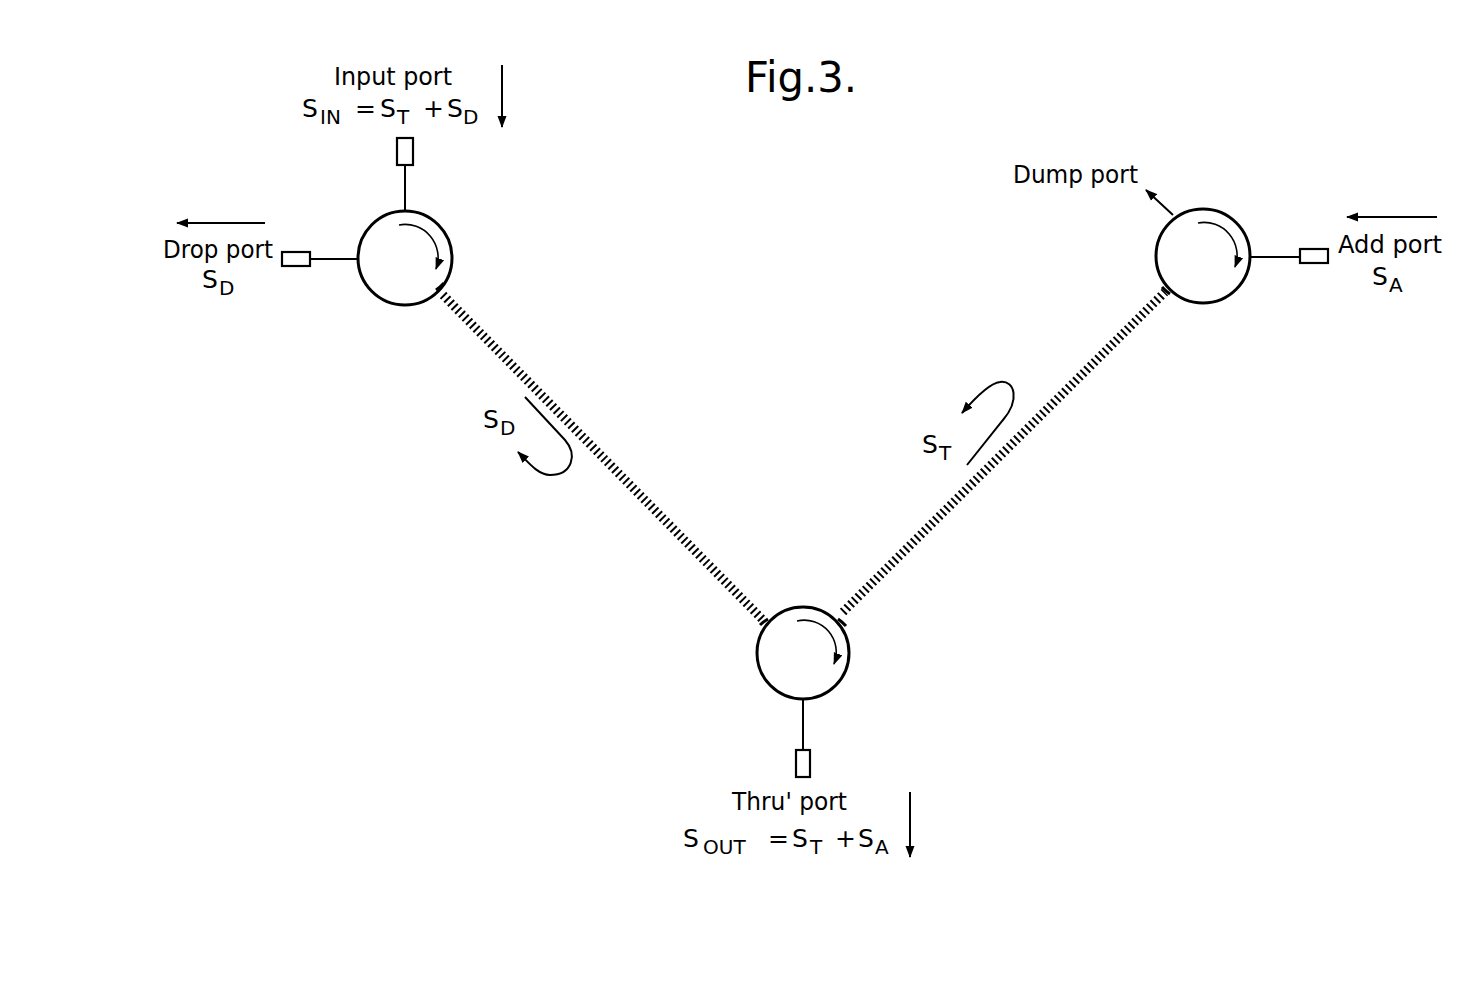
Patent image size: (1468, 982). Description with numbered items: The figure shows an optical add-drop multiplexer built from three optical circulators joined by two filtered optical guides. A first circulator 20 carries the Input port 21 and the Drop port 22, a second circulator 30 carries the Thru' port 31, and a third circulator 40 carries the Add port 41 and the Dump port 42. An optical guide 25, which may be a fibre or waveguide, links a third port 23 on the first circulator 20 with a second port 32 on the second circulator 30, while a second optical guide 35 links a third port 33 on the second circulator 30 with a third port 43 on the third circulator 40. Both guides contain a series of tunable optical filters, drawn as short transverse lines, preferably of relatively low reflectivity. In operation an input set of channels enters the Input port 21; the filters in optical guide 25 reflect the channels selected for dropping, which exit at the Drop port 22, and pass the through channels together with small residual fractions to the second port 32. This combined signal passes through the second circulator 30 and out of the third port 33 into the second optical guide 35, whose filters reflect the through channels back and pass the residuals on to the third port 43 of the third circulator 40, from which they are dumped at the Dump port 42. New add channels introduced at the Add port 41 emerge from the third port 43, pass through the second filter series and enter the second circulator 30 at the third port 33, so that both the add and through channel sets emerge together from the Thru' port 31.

The first optical circulator 20 is at (419, 273).
The Input port 21 is at (402, 208).
The Drop port 22 is at (355, 261).
The third port 23 is at (446, 285).
The optical guide 25 is at (646, 467).
The second optical circulator 30 is at (820, 667).
The Thru' port 31 is at (802, 702).
The second port 32 is at (762, 623).
The third port 33 is at (844, 621).
The second optical guide 35 is at (966, 519).
The third optical circulator 40 is at (1220, 273).
The Add port 41 is at (1253, 250).
The Dump port 42 is at (1173, 213).
The third port 43 is at (1163, 283).